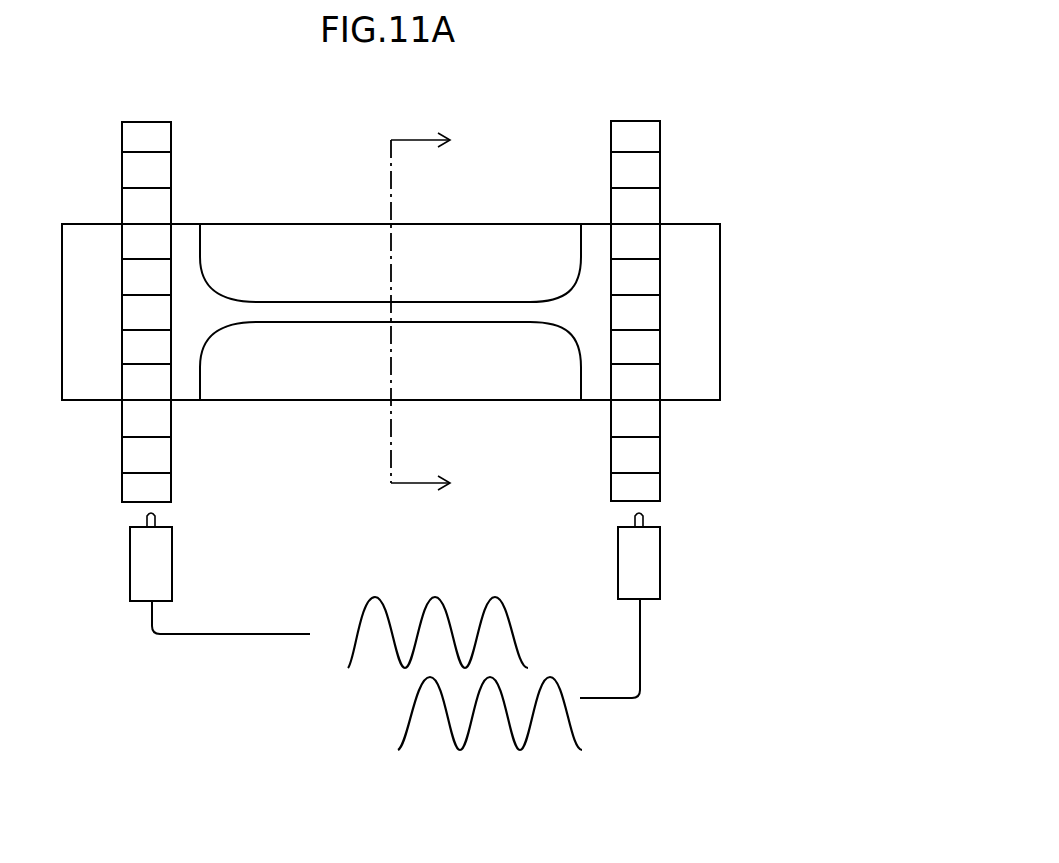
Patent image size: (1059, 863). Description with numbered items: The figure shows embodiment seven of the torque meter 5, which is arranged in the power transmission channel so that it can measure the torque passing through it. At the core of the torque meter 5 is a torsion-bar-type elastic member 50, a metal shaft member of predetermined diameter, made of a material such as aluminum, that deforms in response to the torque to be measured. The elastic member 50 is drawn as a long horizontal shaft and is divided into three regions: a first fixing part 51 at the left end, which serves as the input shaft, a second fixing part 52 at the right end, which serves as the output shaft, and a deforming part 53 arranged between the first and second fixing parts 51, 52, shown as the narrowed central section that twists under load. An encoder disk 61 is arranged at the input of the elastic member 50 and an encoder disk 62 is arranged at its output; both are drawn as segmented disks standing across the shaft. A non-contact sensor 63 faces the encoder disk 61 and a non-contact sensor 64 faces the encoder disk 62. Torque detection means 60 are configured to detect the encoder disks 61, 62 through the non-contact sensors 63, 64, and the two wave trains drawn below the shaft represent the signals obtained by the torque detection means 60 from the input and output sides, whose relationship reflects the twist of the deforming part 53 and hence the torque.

The torque meter 5 is at (715, 103).
The elastic member 50 is at (78, 380).
The first fixing part 51 is at (188, 387).
The second fixing part 52 is at (600, 385).
The deforming part 53 is at (330, 418).
The torque detection means 60 is at (655, 708).
The encoder disk 61 is at (138, 475).
The encoder disk 62 is at (645, 472).
The non-contact sensor 63 is at (147, 570).
The non-contact sensor 64 is at (645, 568).